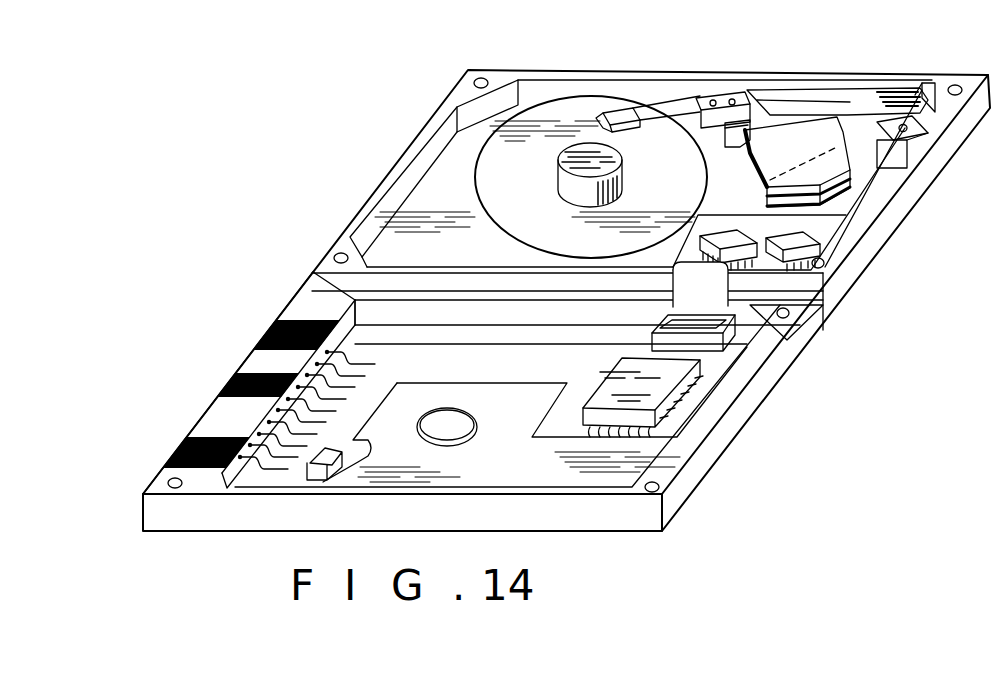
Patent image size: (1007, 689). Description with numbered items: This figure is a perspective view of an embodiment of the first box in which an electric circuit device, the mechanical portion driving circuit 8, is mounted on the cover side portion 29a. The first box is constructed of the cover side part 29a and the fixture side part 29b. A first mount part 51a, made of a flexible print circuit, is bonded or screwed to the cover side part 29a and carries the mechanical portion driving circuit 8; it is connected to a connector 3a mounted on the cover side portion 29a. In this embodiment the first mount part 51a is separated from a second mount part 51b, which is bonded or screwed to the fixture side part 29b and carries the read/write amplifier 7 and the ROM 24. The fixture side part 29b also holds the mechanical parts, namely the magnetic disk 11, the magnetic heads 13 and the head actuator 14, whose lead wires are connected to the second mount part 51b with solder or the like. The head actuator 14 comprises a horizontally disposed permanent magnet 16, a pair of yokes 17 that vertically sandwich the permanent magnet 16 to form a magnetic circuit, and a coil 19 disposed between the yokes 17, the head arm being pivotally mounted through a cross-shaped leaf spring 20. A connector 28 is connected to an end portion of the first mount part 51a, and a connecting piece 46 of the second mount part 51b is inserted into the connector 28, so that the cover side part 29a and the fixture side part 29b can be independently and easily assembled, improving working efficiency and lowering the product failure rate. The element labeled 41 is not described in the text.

The connector 3a is at (232, 403).
The read/write amplifier 7 is at (800, 233).
The mechanical portion driving circuit 8 is at (603, 387).
The magnetic disk 11 is at (492, 180).
The magnetic heads 13 is at (621, 112).
The head actuator 14 is at (856, 93).
The permanent magnet 16 is at (874, 190).
The yokes 17 is at (790, 143).
The coil 19 is at (735, 148).
The cross-shaped leaf spring 20 is at (933, 97).
The ROM 24 is at (734, 235).
The connector 28 is at (660, 321).
The cover side part 29a is at (307, 312).
The fixture side part 29b is at (345, 240).
The base 41 is at (863, 205).
The connecting piece 46 is at (825, 290).
The first mount part 51a is at (557, 432).
The second mount part 51b is at (840, 237).